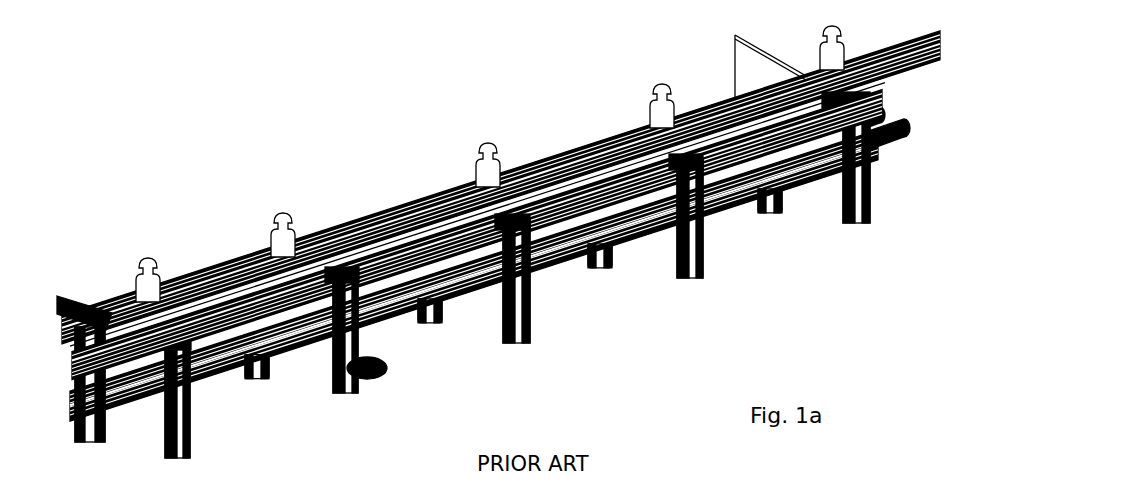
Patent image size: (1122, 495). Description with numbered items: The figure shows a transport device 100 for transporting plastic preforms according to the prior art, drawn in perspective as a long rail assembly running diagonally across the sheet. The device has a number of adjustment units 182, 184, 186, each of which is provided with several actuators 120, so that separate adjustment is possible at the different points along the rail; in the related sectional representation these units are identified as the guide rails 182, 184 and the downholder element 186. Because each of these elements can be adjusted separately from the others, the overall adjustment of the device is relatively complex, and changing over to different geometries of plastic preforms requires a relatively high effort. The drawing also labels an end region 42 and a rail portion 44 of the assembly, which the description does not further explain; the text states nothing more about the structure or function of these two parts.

The prior art conveyor assembly 100 is at (378, 145).
The actuator 120 is at (478, 165).
The guide rail 44 is at (234, 326).
The end guide plate 42 is at (103, 318).
The adjustment unit 182 is at (357, 395).
The adjustment unit 184 is at (518, 345).
The adjustment unit 186 is at (689, 280).